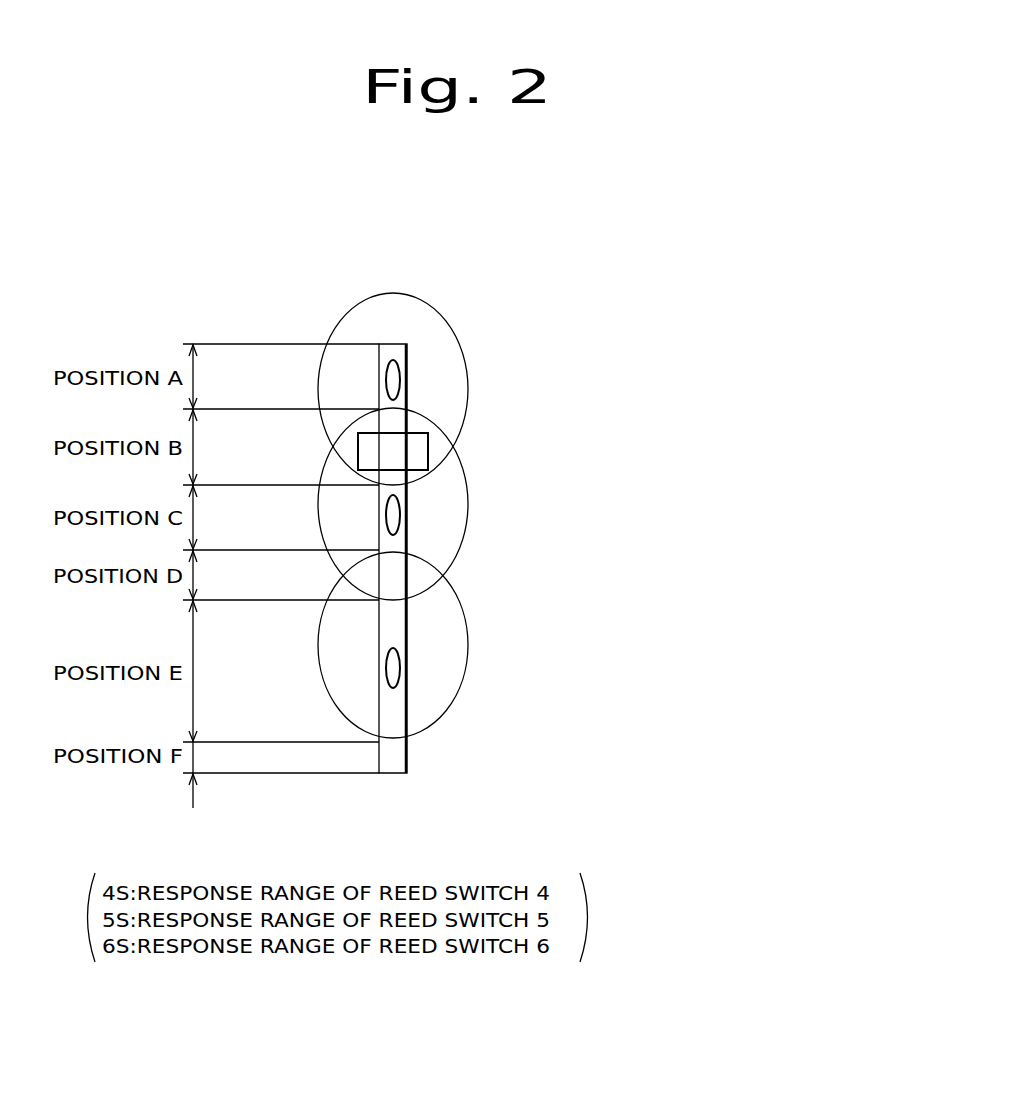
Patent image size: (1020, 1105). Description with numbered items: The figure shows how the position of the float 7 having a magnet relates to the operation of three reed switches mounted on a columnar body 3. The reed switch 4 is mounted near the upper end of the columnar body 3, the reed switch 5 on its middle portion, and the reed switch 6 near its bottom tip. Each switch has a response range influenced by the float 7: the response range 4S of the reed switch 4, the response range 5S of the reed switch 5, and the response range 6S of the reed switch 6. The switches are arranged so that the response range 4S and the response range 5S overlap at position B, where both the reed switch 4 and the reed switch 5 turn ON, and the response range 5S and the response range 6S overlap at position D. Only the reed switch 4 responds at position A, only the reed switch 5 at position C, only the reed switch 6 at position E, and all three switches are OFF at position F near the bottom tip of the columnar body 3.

The columnar body 3 is at (393, 757).
The reed switch 4 is at (400, 380).
The reed switch 5 is at (400, 515).
The reed switch 6 is at (400, 668).
The float having magnet 7 is at (428, 445).
The response range of reed switch 4 4S is at (433, 328).
The response range of reed switch 5 5S is at (453, 497).
The response range of reed switch 6 6S is at (456, 650).